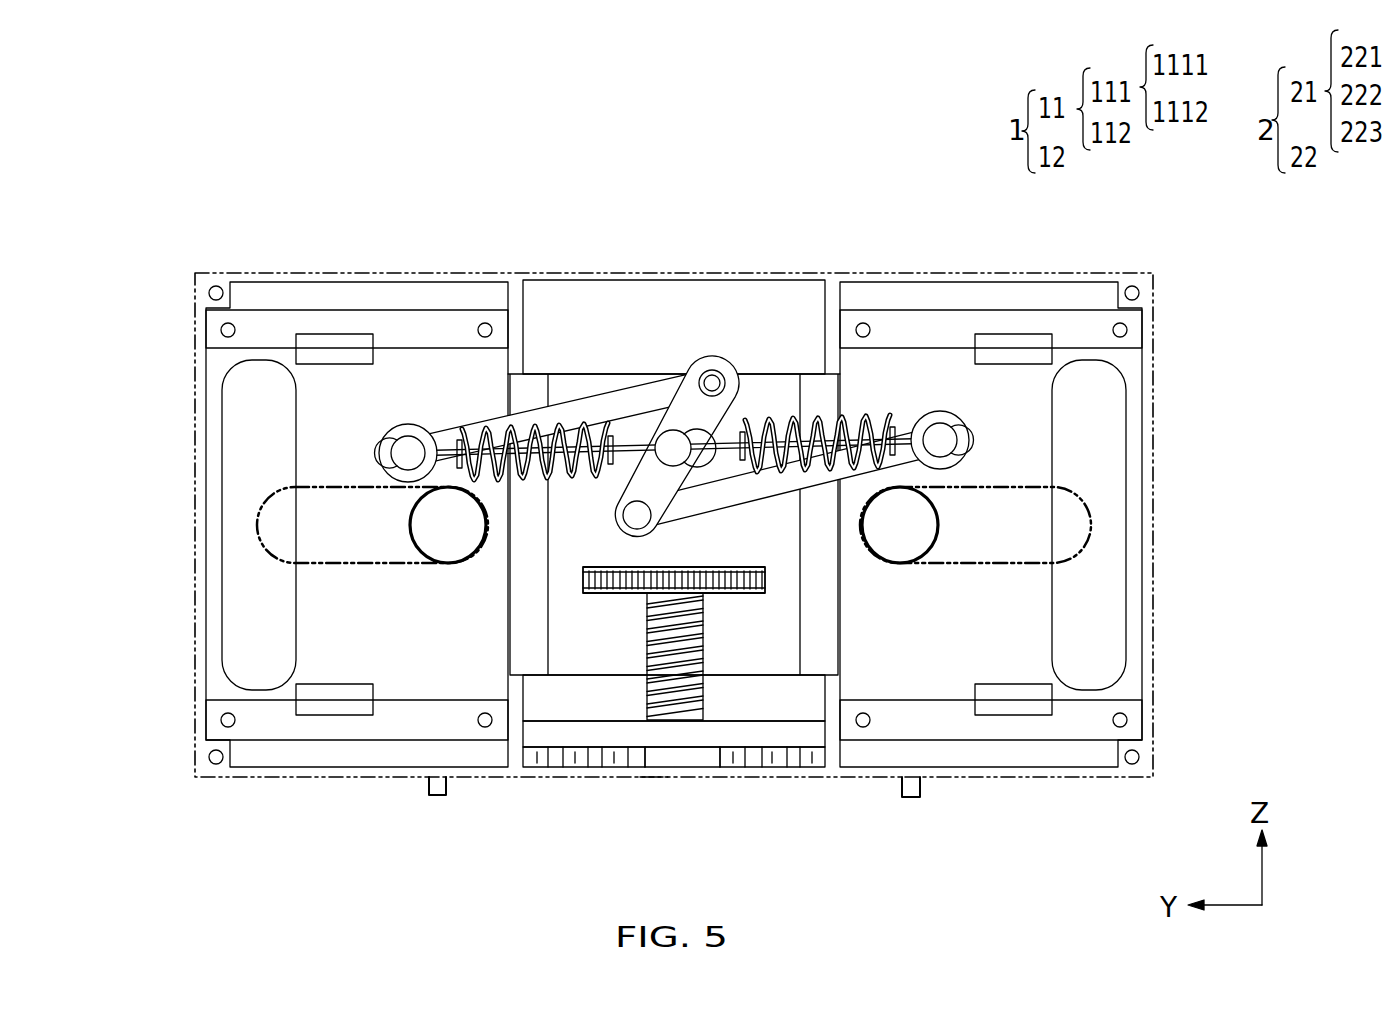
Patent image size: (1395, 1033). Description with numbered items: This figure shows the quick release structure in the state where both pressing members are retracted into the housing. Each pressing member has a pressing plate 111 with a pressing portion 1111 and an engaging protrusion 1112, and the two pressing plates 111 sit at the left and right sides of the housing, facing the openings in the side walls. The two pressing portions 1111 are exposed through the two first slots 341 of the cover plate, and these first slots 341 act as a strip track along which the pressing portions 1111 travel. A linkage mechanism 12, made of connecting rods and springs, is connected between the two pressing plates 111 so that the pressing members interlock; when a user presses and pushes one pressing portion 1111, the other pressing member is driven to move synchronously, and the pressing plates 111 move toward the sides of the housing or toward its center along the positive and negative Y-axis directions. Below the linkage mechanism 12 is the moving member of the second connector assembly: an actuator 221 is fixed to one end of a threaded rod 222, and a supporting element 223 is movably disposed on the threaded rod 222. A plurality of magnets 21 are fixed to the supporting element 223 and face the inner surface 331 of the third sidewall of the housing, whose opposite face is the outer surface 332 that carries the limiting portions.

The linkage mechanism 12 is at (682, 400).
The pressing plate 111 is at (415, 673).
The pressing portion 1111 is at (449, 545).
The engaging protrusion 1112 is at (240, 450).
The magnet 21 is at (614, 768).
The actuator 221 is at (727, 573).
The threaded rod 222 is at (700, 620).
The supporting element 223 is at (712, 733).
The inner surface 331 is at (653, 765).
The outer surface 332 is at (655, 778).
The first slot 341 is at (335, 525).